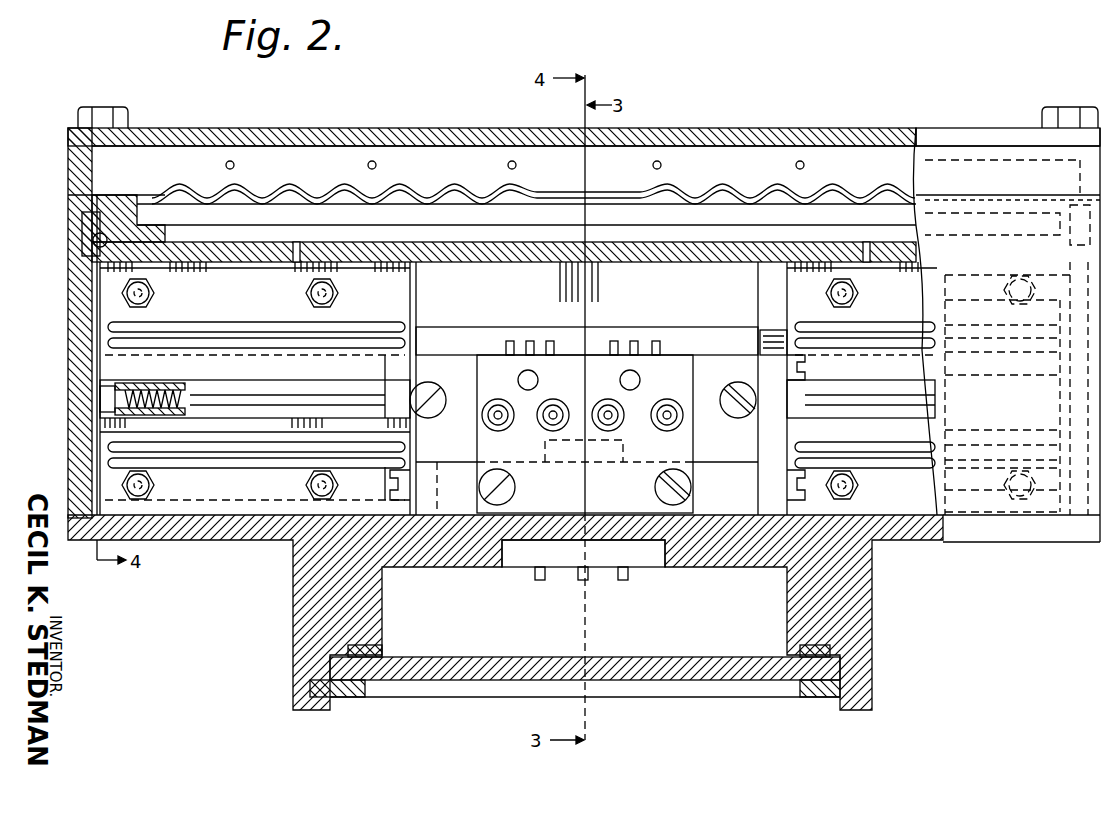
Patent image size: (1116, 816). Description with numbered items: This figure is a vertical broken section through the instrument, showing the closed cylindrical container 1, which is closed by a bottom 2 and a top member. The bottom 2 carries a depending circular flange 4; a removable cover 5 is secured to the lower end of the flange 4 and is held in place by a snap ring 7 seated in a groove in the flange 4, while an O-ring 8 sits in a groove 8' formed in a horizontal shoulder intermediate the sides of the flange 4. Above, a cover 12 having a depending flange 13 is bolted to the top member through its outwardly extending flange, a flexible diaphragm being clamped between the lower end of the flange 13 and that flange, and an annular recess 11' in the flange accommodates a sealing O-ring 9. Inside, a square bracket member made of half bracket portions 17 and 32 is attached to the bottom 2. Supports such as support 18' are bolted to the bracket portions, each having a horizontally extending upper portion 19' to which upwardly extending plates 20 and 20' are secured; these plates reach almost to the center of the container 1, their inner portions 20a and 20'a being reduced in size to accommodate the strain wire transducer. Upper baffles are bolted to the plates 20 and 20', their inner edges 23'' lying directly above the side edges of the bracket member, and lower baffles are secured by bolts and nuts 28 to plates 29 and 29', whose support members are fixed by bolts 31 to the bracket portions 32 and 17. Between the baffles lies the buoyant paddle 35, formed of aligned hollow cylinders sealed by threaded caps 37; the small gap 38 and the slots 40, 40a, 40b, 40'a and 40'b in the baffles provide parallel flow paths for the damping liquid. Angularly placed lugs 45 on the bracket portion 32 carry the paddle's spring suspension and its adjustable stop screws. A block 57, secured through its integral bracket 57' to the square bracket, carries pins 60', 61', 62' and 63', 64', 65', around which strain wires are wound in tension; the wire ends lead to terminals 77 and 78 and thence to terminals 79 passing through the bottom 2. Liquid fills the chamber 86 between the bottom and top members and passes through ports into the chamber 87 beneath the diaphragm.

The container 1 is at (104, 352).
The bottom 2 is at (202, 540).
The depending circular flange 4 is at (280, 603).
The removable cover 5 is at (420, 684).
The snap ring 7 is at (350, 690).
The O-ring 8 is at (589, 646).
The groove 8' is at (401, 630).
The O-ring 9 is at (84, 236).
The annular recess 11' is at (65, 355).
The cover 12 is at (412, 134).
The depending flange 13 is at (68, 165).
The half bracket portion 17 is at (450, 540).
The support 18' is at (774, 443).
The horizontally extending upper portion 19' is at (754, 330).
The upwardly extending plate 20 is at (403, 388).
The upwardly extending plate 20' is at (1007, 360).
The inner portion of plate 20a is at (545, 304).
The inner portion of plate 20'a is at (668, 293).
The inner edges of baffles 23'' is at (342, 318).
The nuts 28 is at (312, 494).
The plate 29 is at (219, 495).
The plate 29' is at (900, 553).
The bolts 31 is at (392, 502).
The half bracket portion 32 is at (738, 530).
The buoyant paddle 35 is at (342, 392).
The threaded caps 37 is at (106, 398).
The gap 38 is at (110, 428).
The slots 40 is at (181, 389).
The auxiliary slot 40a is at (320, 338).
The auxiliary slot 40b is at (200, 452).
The auxiliary slot 40'a is at (865, 325).
The auxiliary slot 40'b is at (865, 445).
The angularly placed lugs 45 is at (714, 452).
The block 57 is at (587, 434).
The longitudinally extending bracket 57' is at (559, 446).
The pin 60' is at (587, 341).
The pin 61' is at (508, 320).
The pin 62' is at (549, 320).
The pin 63' is at (626, 320).
The pin 64' is at (659, 320).
The pin 65' is at (684, 336).
The terminals 77 is at (504, 412).
The terminals 78 is at (614, 412).
The terminals 79 is at (620, 582).
The chamber 86 is at (752, 272).
The chamber 87 is at (526, 215).